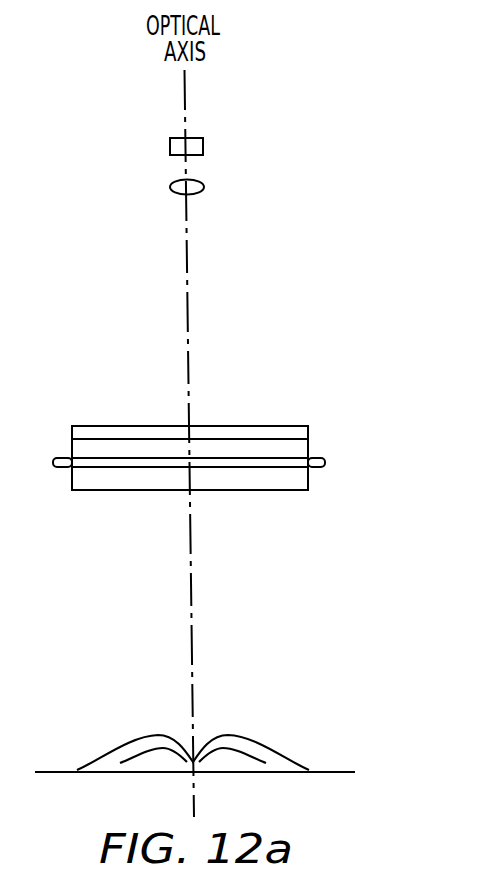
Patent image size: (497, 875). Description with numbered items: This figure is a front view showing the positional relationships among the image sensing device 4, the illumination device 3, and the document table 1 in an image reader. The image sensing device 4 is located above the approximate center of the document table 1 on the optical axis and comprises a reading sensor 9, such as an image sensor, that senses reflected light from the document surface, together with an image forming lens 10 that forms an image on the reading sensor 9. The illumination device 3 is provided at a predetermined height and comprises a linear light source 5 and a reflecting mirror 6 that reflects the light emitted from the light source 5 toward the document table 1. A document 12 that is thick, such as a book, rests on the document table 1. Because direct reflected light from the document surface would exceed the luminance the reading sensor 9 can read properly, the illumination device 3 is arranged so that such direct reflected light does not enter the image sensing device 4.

The document table 1 is at (345, 768).
The illumination device 3 is at (240, 412).
The image sensing device 4 is at (141, 163).
The linear light source 5 is at (262, 465).
The reflecting mirror 6 is at (121, 489).
The reading sensor 9 is at (198, 139).
The image forming lens 10 is at (199, 183).
The document 12 is at (243, 734).